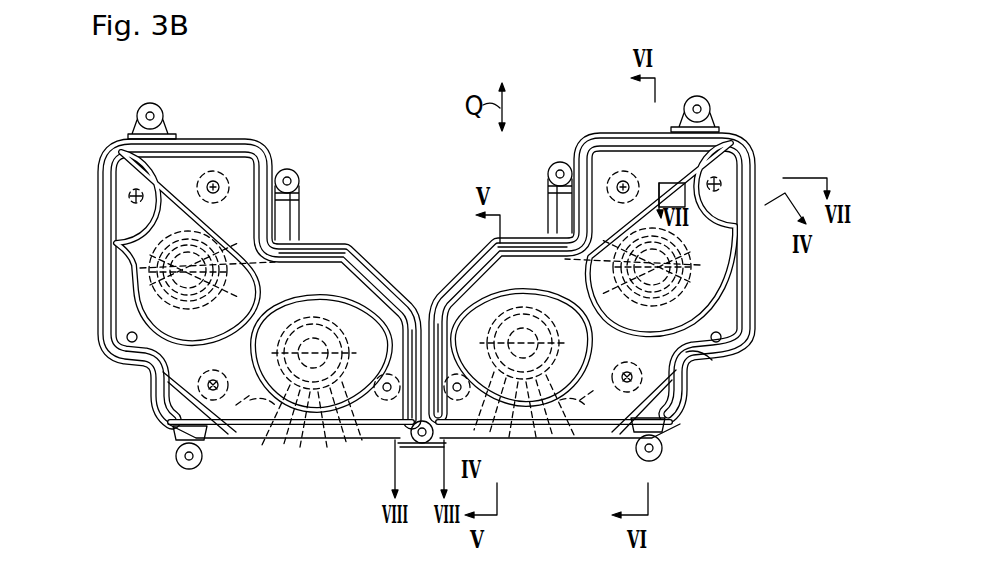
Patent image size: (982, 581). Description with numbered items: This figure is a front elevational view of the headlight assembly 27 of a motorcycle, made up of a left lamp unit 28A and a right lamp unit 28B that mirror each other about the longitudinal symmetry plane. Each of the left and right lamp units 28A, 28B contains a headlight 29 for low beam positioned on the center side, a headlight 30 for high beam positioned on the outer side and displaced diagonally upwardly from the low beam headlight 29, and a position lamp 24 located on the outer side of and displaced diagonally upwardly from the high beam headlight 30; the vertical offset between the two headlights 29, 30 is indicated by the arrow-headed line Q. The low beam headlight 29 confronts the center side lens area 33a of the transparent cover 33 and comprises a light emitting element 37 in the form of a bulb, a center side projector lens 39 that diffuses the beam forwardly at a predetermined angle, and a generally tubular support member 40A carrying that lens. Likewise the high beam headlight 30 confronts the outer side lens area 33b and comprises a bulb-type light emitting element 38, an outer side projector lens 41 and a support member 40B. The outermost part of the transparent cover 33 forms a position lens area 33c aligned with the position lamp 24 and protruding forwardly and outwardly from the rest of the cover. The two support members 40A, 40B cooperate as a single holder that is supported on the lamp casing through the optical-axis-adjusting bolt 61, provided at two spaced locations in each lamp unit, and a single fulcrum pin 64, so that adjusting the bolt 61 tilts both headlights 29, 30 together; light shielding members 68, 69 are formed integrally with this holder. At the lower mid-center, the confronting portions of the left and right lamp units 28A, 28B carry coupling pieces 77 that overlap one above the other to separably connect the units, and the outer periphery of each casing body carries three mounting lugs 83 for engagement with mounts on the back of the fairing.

The position lamp 24 is at (128, 196).
The headlight assembly 27 is at (420, 266).
The left lamp unit 28A is at (148, 394).
The right lamp unit 28B is at (683, 386).
The headlight for low beam 29 is at (322, 402).
The headlight for high beam 30 is at (175, 266).
The transparent cover 33 is at (268, 402).
The center side lens area 33a is at (564, 400).
The outer side lens area 33b is at (688, 353).
The position lens area 33c is at (117, 160).
The light emitting element 37 is at (342, 402).
The light emitting element 38 is at (160, 300).
The center side projector lens 39 is at (300, 420).
The tubular support member 40A is at (290, 445).
The support member 40B is at (172, 275).
The outer side projector lens 41 is at (130, 348).
The optical-axis-adjusting bolt 61 is at (228, 173).
The fulcrum pin 64 is at (170, 422).
The light shielding member 68 is at (246, 402).
The light shielding member 69 is at (290, 248).
The coupling piece 77 is at (422, 444).
The mounting lug 83 is at (158, 110).